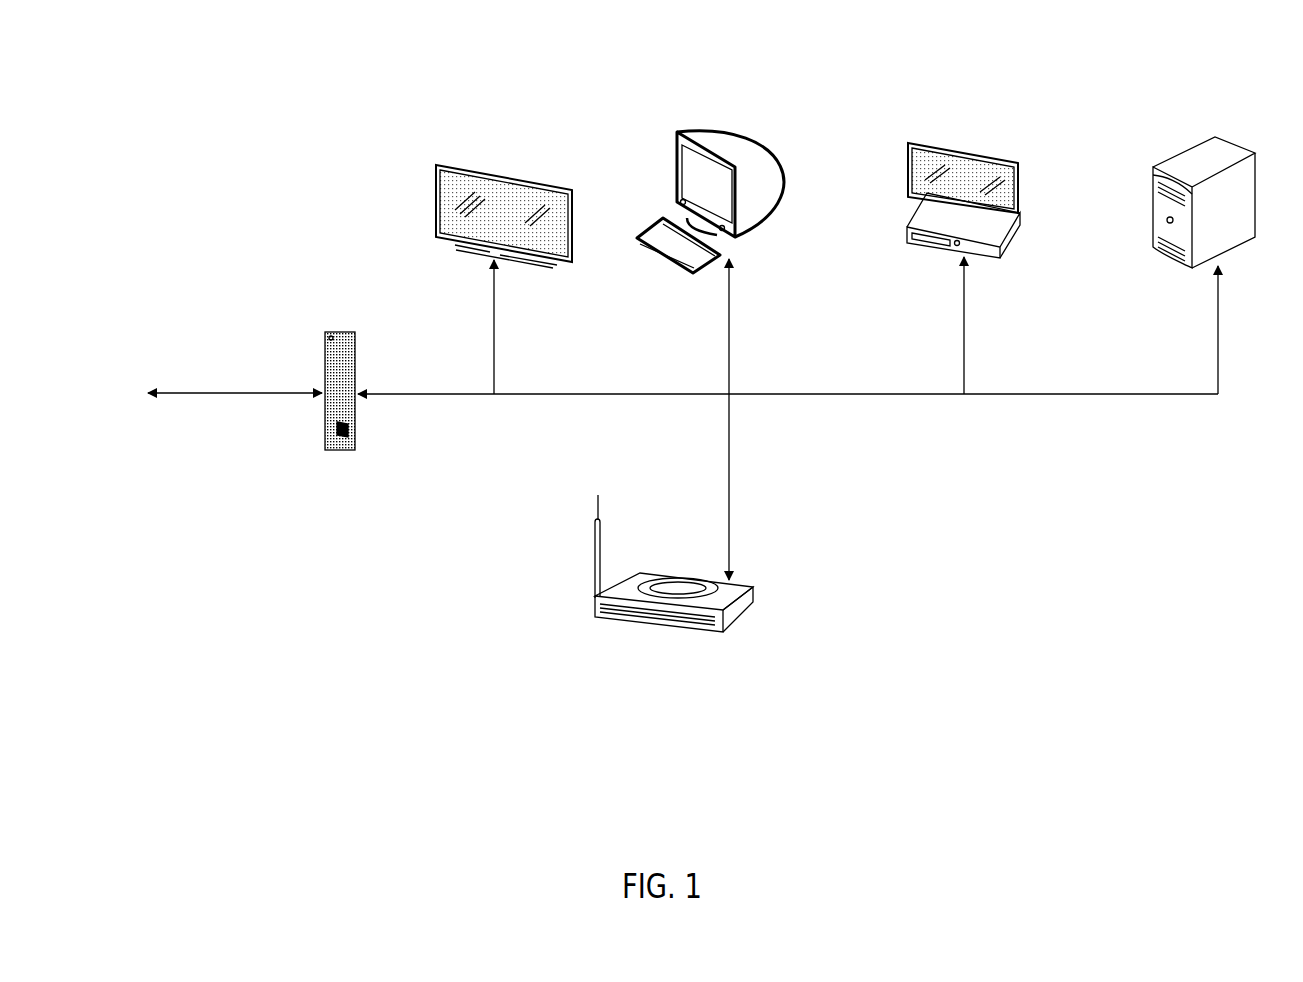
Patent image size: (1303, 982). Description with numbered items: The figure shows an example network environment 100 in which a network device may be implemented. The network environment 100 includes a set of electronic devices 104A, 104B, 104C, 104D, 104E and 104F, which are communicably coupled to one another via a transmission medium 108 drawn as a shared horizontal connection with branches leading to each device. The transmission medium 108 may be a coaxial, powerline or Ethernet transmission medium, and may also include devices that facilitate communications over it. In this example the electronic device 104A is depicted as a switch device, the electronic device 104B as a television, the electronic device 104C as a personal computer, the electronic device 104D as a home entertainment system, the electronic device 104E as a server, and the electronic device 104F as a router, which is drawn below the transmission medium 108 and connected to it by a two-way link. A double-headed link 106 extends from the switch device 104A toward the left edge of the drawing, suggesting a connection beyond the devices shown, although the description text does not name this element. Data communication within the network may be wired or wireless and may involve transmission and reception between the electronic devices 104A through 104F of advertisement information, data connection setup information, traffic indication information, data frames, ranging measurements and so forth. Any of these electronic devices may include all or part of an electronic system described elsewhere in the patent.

The network environment 100 is at (272, 55).
The electronic device (switch device) 104A is at (340, 330).
The electronic device (television) 104B is at (508, 177).
The electronic device (personal computer) 104C is at (733, 135).
The electronic device (home entertainment system) 104D is at (1025, 232).
The electronic device (server) 104E is at (1227, 138).
The electronic device (router) 104F is at (678, 630).
The external network connection 106 is at (257, 383).
The transmission medium 108 is at (1025, 398).